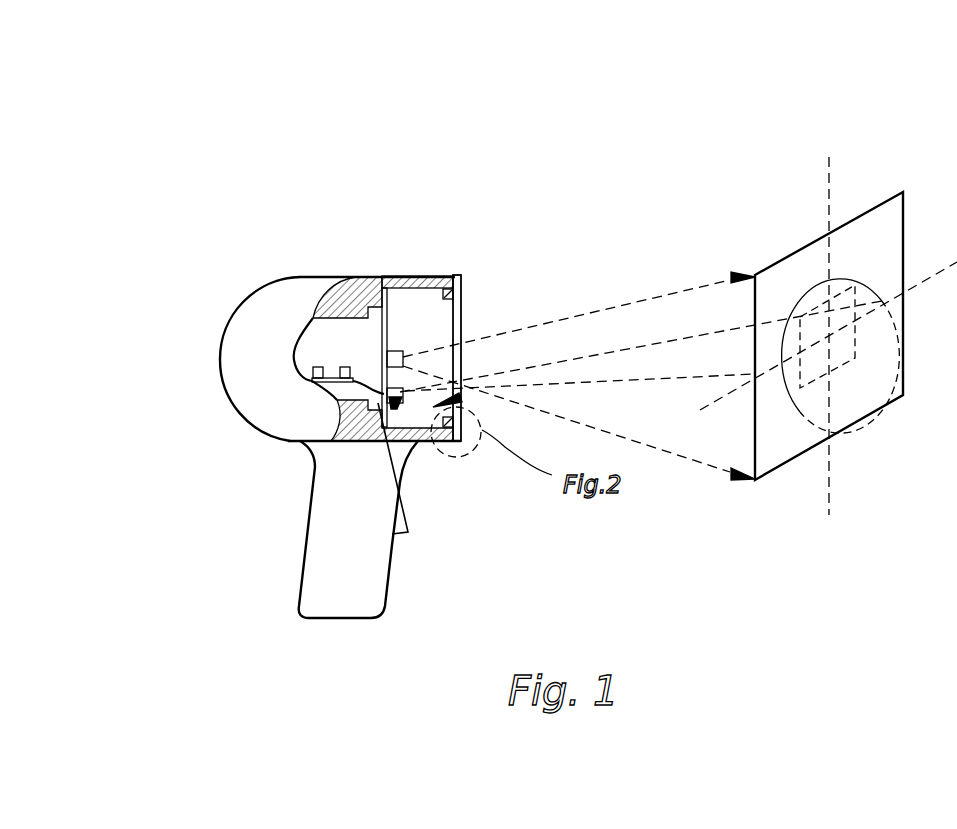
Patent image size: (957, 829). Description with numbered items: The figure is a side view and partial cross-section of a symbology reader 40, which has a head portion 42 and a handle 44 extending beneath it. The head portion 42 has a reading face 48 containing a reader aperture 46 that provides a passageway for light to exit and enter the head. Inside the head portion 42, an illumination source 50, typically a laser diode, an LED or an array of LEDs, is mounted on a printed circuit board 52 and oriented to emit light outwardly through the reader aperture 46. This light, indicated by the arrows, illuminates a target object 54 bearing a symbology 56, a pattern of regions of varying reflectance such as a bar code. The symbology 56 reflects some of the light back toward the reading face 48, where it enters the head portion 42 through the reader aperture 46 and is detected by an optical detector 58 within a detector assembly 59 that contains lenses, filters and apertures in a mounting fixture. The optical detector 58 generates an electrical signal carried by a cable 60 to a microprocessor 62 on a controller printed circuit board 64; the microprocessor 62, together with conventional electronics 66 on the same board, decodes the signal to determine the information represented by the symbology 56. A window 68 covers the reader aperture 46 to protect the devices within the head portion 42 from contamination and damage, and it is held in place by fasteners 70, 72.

The symbology reader 40 is at (176, 350).
The head portion 42 is at (255, 327).
The handle 44 is at (300, 553).
The reader aperture 46 is at (460, 396).
The reading face 48 is at (448, 365).
The illumination source 50 is at (403, 354).
The printed circuit board 52 is at (380, 277).
The target object 54 is at (858, 213).
The symbology 56 is at (790, 347).
The optical detector 58 is at (402, 405).
The detector assembly 59 is at (373, 441).
The cable 60 is at (335, 399).
The microprocessor 62 is at (345, 366).
The controller printed circuit board 64 is at (346, 379).
The conventional electronics 66 is at (317, 366).
The window 68 is at (452, 277).
The fastener 70 is at (463, 430).
The fastener 72 is at (459, 278).